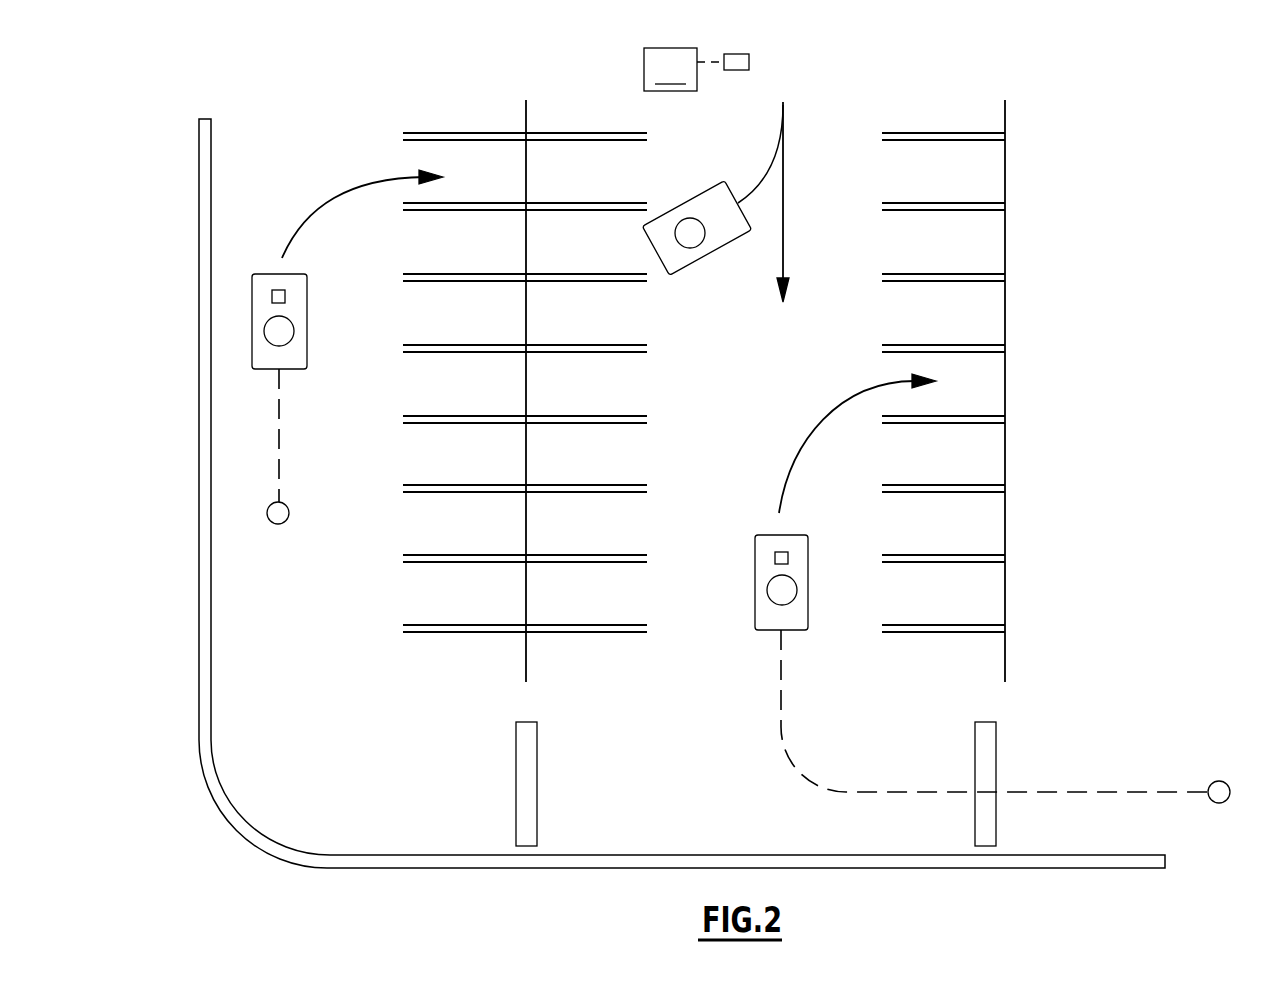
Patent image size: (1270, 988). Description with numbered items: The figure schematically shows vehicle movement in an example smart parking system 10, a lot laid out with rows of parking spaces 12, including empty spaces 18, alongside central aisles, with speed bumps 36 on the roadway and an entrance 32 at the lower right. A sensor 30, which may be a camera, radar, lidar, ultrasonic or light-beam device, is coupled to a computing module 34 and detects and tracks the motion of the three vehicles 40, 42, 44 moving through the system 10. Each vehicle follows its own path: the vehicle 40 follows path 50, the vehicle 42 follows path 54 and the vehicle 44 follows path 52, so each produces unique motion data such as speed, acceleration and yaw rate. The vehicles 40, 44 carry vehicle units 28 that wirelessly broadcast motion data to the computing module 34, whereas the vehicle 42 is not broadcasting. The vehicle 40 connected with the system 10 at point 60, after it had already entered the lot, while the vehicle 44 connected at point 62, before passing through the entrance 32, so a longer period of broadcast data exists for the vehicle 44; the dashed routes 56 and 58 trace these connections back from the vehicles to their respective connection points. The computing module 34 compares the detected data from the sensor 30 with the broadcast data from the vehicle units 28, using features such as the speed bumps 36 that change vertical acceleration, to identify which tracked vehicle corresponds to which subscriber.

The parking system 10 is at (362, 69).
The parking spaces 12 is at (450, 600).
The empty spaces 18 is at (470, 160).
The vehicle unit 28 is at (285, 296).
The sensor 30 is at (749, 62).
The entrance 32 is at (1023, 742).
The computing module 34 is at (684, 69).
The speed bumps 36 is at (537, 790).
The vehicle 40 is at (307, 340).
The vehicle 42 is at (692, 262).
The vehicle 44 is at (755, 570).
The path 50 is at (316, 200).
The path 52 is at (793, 448).
The path 54 is at (783, 200).
The planned route to destination 56 is at (280, 440).
The planned route to destination 58 is at (1060, 790).
The point 60 is at (286, 522).
The point 62 is at (1224, 782).